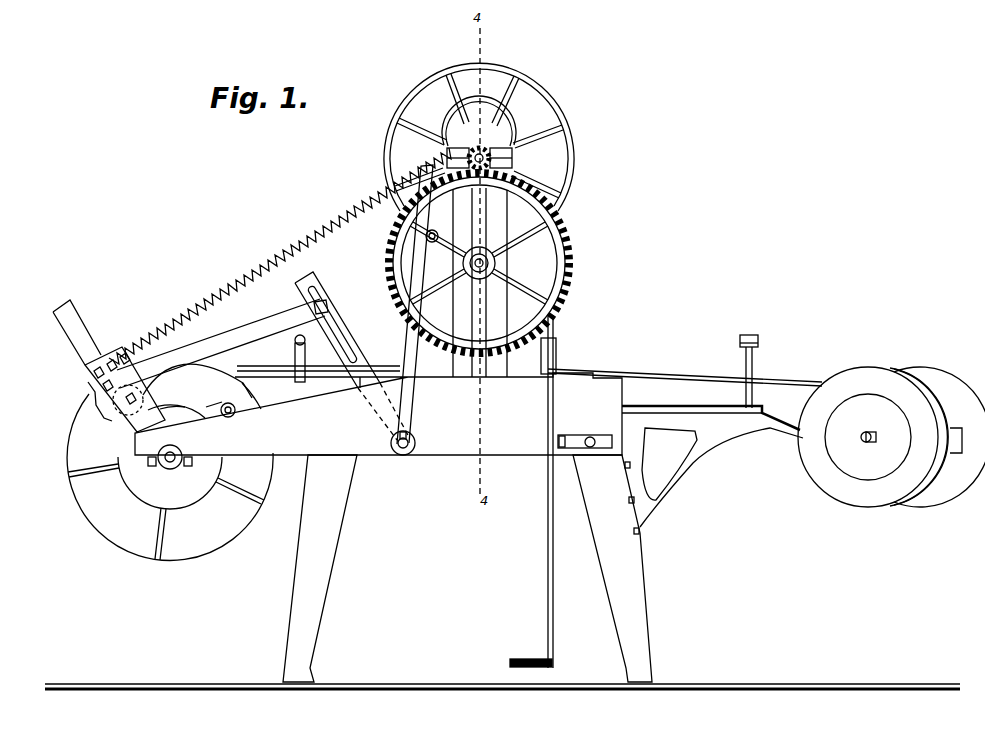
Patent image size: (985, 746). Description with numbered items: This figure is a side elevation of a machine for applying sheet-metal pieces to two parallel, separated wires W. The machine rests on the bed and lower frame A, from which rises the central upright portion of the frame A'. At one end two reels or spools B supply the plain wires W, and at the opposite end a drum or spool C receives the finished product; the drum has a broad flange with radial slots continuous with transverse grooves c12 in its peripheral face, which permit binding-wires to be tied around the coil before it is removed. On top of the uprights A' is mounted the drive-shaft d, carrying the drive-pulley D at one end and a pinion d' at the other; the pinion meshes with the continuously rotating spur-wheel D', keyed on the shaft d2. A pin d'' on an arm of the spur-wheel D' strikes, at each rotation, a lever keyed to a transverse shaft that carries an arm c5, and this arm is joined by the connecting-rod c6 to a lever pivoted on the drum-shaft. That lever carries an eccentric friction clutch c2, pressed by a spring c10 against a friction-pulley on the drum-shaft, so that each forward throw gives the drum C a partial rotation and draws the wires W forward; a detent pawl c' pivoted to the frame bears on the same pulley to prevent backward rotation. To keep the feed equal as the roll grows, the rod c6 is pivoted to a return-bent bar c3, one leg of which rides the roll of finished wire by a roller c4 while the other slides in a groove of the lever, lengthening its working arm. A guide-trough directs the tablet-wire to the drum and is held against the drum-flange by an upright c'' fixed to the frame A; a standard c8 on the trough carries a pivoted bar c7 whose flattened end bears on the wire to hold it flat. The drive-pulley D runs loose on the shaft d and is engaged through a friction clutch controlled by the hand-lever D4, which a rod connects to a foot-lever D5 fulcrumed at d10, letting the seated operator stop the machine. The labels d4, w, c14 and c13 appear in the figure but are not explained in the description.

The bed and lower frame A is at (469, 527).
The central upright portion of the frame A' is at (481, 282).
The drive-pulley D is at (482, 137).
The drive-shaft d is at (483, 146).
The pinion d' is at (479, 146).
The spur-wheel D' is at (494, 263).
The pin d'' is at (438, 228).
The shaft d2 is at (500, 268).
The hand-lever D4 is at (520, 280).
The slide block d4 is at (556, 345).
The foot-lever D5 is at (553, 640).
The fulcrum of foot-lever d10 is at (556, 441).
The plain wires W is at (685, 368).
The adjusting screw w is at (755, 371).
The reels or spools B is at (891, 437).
The spring c14 is at (280, 256).
The drum or spool C is at (170, 471).
The bar c7 is at (178, 452).
The arm c5 is at (364, 304).
The roller c4 is at (402, 452).
The detent pawl or clutch c' is at (235, 358).
The connecting-rod c6 is at (222, 346).
The standard c8 is at (308, 358).
The upright c'' is at (352, 382).
The return-bent bar c3 is at (77, 332).
The transverse grooves or slits c12 is at (125, 389).
The spring c10 is at (99, 403).
The eccentric friction pawl or clutch c2 is at (150, 403).
The hub flange c13 is at (177, 411).